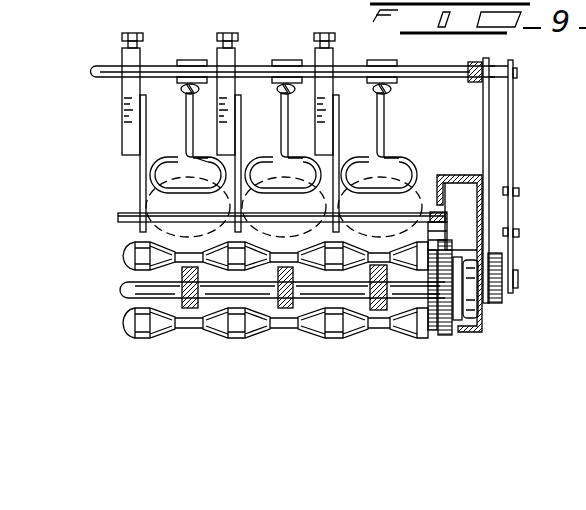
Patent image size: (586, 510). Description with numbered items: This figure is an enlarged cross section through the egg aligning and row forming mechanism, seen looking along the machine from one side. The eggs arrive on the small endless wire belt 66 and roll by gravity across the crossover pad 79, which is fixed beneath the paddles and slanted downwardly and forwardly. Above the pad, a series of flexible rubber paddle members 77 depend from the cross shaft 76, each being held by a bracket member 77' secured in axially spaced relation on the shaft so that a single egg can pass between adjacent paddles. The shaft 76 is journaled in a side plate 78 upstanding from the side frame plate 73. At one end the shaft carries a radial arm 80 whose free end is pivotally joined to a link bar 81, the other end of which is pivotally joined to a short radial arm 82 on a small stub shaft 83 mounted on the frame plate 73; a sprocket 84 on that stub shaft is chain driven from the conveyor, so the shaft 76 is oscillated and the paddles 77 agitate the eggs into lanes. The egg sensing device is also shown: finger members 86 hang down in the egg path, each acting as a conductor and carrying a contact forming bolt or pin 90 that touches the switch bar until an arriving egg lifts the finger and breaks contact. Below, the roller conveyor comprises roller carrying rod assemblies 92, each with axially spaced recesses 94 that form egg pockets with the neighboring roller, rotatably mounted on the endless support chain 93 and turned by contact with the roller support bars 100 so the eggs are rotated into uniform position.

The bracket member 77' is at (252, 94).
The cross shaft 76 is at (408, 73).
The contact forming bolt or pin 90 is at (281, 91).
The finger member 86 is at (186, 143).
The paddle member 77 is at (241, 163).
The endless wire belt 66 is at (362, 197).
The crossover pad 79 is at (126, 216).
The roller carrying rod assembly 92 is at (133, 246).
The roller support bar 100 is at (184, 302).
The recess 94 is at (258, 328).
The endless support chain 93 is at (447, 330).
The side frame plate 73 is at (481, 174).
The side plate 78 is at (483, 113).
The radial arm 80 is at (513, 128).
The link bar 81 is at (513, 212).
The short radial arm 82 is at (515, 252).
The stub shaft 83 is at (518, 278).
The sprocket 84 is at (505, 300).